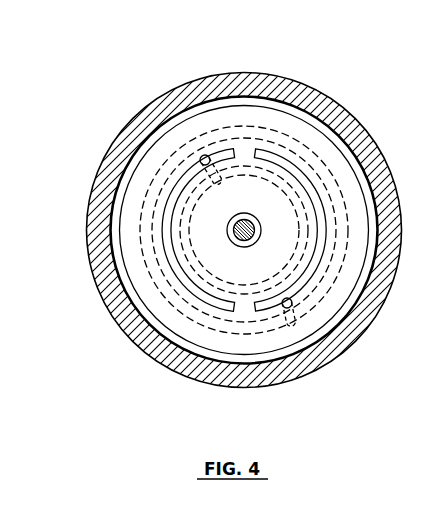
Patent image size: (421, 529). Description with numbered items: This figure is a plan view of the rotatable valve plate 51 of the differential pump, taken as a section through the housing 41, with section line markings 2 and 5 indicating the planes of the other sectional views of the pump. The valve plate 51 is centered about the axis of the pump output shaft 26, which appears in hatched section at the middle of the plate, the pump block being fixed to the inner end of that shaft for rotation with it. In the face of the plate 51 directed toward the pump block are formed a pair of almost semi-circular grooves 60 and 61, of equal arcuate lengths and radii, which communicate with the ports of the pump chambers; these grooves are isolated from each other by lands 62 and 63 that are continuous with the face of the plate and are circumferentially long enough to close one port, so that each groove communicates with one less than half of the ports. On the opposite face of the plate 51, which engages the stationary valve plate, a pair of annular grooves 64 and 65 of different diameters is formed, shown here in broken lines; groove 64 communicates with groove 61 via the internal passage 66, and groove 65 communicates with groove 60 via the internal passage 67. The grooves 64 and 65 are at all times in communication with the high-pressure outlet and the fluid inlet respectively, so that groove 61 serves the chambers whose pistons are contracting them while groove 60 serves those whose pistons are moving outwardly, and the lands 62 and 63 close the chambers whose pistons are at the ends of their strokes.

The housing 41 is at (321, 96).
The rotatable valve plate 51 is at (248, 126).
The almost semi-circular groove 60 is at (313, 193).
The almost semi-circular groove 61 is at (181, 192).
The land 62 is at (247, 152).
The land 63 is at (246, 301).
The annular groove 64 is at (186, 234).
The annular groove 65 is at (241, 331).
The internal passage 66 is at (201, 157).
The internal passage 67 is at (291, 305).
The pump output shaft 26 is at (238, 238).
The section line 2- 2 is at (248, 65).
The section line 5- 5 is at (275, 283).